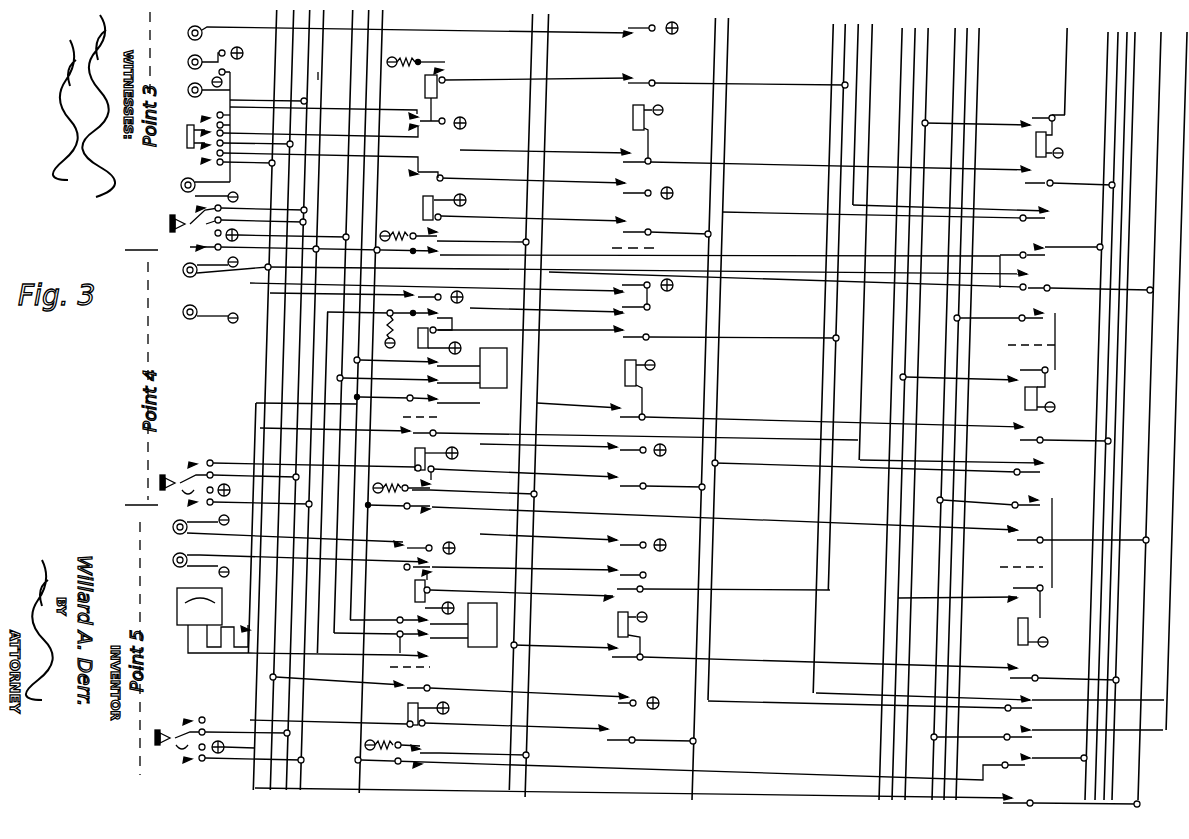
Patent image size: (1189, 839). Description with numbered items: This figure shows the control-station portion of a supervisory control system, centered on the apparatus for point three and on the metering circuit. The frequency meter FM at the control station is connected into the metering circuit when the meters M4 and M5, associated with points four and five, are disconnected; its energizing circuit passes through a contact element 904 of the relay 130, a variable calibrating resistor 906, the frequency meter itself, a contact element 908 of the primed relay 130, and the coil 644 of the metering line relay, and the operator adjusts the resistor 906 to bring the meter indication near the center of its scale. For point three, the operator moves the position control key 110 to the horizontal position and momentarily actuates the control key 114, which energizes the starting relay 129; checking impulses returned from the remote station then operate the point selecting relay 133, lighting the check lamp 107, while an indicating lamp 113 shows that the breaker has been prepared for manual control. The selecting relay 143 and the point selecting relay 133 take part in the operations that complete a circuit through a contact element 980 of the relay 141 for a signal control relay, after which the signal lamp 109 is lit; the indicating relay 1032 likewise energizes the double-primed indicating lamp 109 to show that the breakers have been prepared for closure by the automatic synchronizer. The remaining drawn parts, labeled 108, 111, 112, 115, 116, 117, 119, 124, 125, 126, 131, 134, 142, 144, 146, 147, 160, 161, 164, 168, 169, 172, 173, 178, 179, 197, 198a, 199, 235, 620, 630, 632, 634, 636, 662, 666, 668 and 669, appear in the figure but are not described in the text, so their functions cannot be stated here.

The check lamp 107 is at (420, 25).
The terminal 108 is at (202, 53).
The signal lamp 109 is at (196, 125).
The position control key 110 is at (288, 149).
The contact 111 is at (201, 111).
The contact 112 is at (213, 159).
The indicating lamp 113 is at (195, 189).
The control key 114 is at (228, 214).
The contact 115 is at (193, 204).
The contact 116 is at (297, 241).
The terminal 117 is at (275, 528).
The terminal 119 is at (287, 560).
The push button 124 is at (221, 603).
The contact 125 is at (170, 726).
The contact 126 is at (230, 627).
The starting relay 129 is at (424, 192).
The relay 130 is at (418, 332).
The relay 131 is at (477, 591).
The point selecting relay 133 is at (630, 126).
The relay 134 is at (626, 372).
The relay 141 is at (1036, 146).
The relay 142 is at (1024, 400).
The selecting relay 143 is at (1016, 640).
The resistor 144 is at (412, 484).
The conductor 146 is at (305, 99).
The conductor 147 is at (520, 418).
The contact 160 is at (1014, 542).
The contact 161 is at (434, 506).
The conductor 164 is at (1108, 380).
The contact 168 is at (824, 423).
The contact 169 is at (618, 287).
The contact 172 is at (573, 451).
The contact 173 is at (618, 484).
The conductor 178 is at (816, 804).
The conductor 179 is at (776, 286).
The contact 197 is at (1040, 736).
The contact 198a is at (1040, 258).
The contact 199 is at (1040, 764).
The conductor 235 is at (318, 72).
The contact 620 is at (412, 546).
The resistor contact 630 is at (330, 250).
The conductor 632 is at (360, 283).
The contact 634 is at (408, 377).
The contact 636 is at (417, 360).
The coil of the metering line relay 644 is at (309, 584).
The contact 662 is at (440, 320).
The contact 666 is at (408, 572).
The contact 668 is at (634, 568).
The contact 669 is at (440, 572).
The contact element 904 is at (432, 398).
The variable calibrating resistor 906 is at (213, 620).
The contact element 908 is at (432, 642).
The contact element 980 is at (1040, 706).
The indicating relay 1032 is at (422, 88).
The meter M4 is at (490, 377).
The meter M5 is at (482, 635).